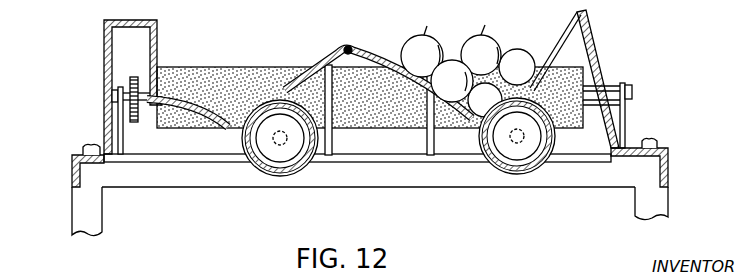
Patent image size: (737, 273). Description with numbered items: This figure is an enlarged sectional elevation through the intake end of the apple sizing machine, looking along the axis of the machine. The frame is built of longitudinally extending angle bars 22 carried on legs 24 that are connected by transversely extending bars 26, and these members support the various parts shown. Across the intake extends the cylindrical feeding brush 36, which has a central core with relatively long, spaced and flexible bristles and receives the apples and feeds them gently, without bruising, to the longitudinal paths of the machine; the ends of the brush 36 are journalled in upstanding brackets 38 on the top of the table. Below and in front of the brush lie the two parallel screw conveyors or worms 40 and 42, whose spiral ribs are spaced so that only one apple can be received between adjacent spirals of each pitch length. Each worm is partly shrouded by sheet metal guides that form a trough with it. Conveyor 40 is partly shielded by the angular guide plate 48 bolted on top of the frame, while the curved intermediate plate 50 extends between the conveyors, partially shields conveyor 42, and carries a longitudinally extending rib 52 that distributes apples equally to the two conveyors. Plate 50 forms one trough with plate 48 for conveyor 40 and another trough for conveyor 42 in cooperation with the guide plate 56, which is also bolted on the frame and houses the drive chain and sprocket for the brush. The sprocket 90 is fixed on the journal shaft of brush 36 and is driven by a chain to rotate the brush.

The angle bars 22 is at (70, 176).
The legs 24 is at (78, 221).
The transversely extending bars 26 is at (174, 182).
The cylindrical feeding brush 36 is at (252, 66).
The upstanding brackets 38 is at (118, 122).
The screw conveyor 40 is at (518, 168).
The screw conveyor 42 is at (282, 170).
The angular guide plate 48 is at (592, 40).
The curved intermediate plate 50 is at (376, 55).
The longitudinally extending rib 52 is at (349, 45).
The guide plate 56 is at (182, 96).
The sprocket 90 is at (136, 77).